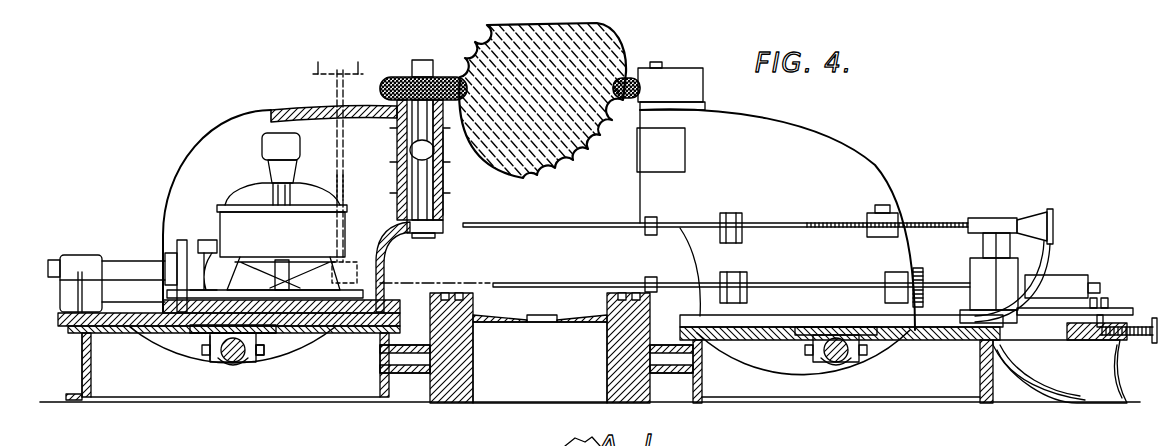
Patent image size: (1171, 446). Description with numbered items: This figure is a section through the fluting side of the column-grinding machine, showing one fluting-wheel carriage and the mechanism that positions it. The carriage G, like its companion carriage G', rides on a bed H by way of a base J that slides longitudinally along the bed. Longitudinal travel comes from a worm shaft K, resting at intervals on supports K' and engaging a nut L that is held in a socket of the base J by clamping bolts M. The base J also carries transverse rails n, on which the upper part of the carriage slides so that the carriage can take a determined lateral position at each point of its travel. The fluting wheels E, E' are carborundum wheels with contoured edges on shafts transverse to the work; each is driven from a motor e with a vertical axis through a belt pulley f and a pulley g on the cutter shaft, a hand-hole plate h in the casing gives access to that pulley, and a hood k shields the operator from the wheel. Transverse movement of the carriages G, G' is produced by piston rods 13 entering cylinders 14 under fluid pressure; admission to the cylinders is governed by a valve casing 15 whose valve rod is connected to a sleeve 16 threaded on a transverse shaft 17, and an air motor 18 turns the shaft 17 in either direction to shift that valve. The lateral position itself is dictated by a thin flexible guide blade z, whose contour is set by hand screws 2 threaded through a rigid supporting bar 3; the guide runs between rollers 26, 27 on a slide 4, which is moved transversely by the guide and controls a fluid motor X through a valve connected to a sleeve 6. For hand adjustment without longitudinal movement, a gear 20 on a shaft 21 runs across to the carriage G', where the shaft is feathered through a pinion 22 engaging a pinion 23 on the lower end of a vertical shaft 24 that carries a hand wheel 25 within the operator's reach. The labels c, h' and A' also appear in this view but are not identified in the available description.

The hand wheel 25 is at (323, 73).
The fluting wheel E' is at (422, 67).
The pulley g is at (410, 150).
The belt pulley f is at (268, 148).
The carriage G' is at (273, 209).
The vertical shaft 24 is at (345, 185).
The pinion 23 is at (350, 263).
The cylinder 14 is at (207, 255).
The piston rod 13 is at (123, 270).
The rail n is at (136, 310).
The motor e is at (265, 240).
The bed H is at (82, 372).
The base J is at (957, 337).
The bearing flange c is at (196, 330).
The worm shaft K is at (533, 363).
The nut L is at (250, 336).
The clamping bolt M is at (264, 355).
The support K' is at (245, 400).
The pinion 22 is at (520, 351).
The fluid motor X is at (480, 322).
The valve stem h' is at (459, 172).
The fluting wheel E is at (620, 126).
The cam A' is at (530, 114).
The carriage G is at (777, 219).
The hood k is at (669, 86).
The hand-hole plate h is at (679, 150).
The shaft 17 is at (768, 223).
The sleeve 16 is at (878, 238).
The valve casing 15 is at (890, 208).
The air motor 18 is at (1068, 200).
The slide 4 is at (1068, 308).
The shaft 21 is at (762, 283).
The gear 20 is at (923, 295).
The sleeve 6 is at (1062, 275).
The roller 27 is at (1105, 322).
The roller 26 is at (1068, 330).
The supporting bar 3 is at (1135, 327).
The hand screw 2 is at (1122, 345).
The guide z is at (1087, 330).